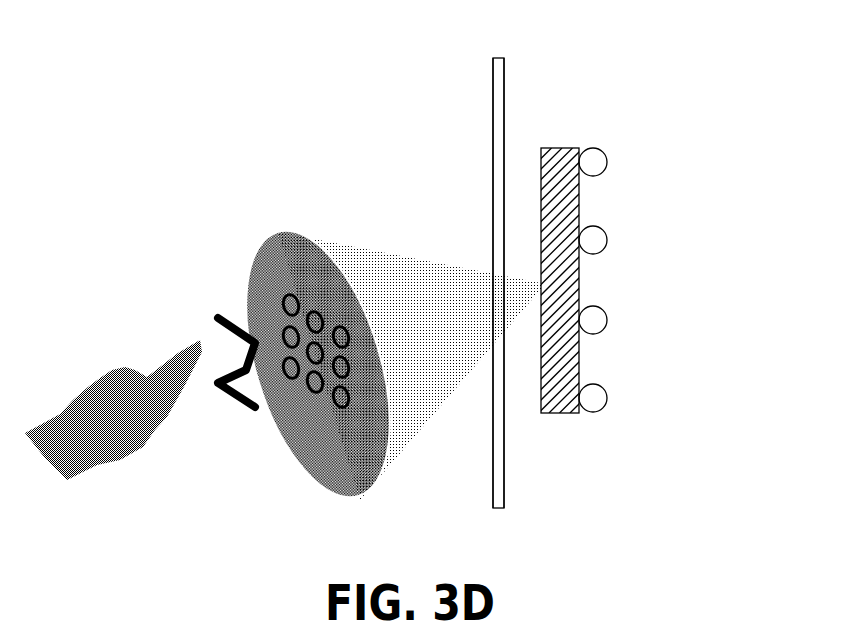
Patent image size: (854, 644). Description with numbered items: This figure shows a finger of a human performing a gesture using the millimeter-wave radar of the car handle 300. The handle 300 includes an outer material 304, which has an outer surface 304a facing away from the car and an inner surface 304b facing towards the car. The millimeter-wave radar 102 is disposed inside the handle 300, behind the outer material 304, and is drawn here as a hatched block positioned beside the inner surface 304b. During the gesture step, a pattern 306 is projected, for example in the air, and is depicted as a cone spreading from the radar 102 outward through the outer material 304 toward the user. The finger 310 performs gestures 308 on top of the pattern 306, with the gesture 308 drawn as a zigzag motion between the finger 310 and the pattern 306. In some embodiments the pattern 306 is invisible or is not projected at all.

The handle 300 is at (414, 95).
The millimeter-wave radar 102 is at (580, 208).
The outer material 304 is at (496, 58).
The outer surface 304a is at (493, 163).
The inner surface 304b is at (504, 492).
The pattern 306 is at (280, 233).
The gesture 308 is at (218, 318).
The finger 310 is at (178, 357).